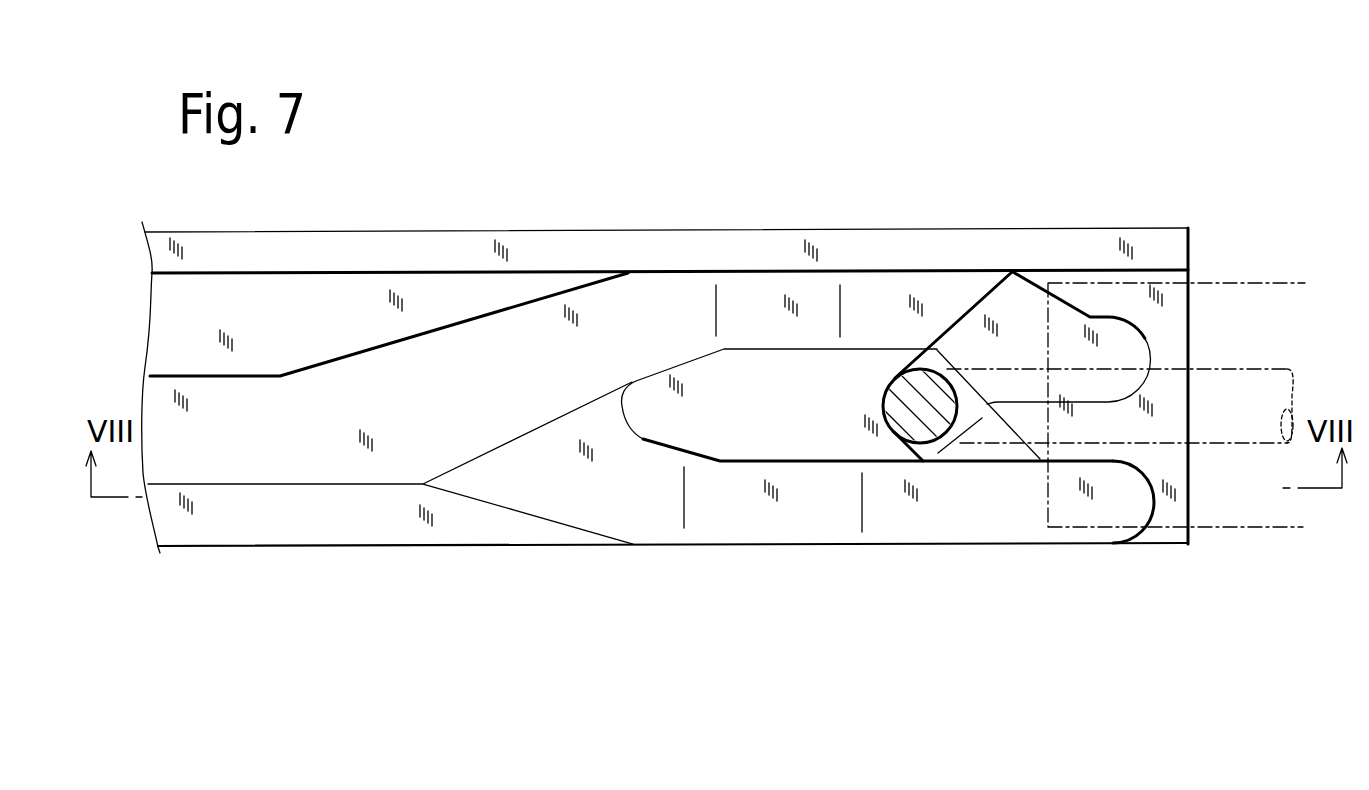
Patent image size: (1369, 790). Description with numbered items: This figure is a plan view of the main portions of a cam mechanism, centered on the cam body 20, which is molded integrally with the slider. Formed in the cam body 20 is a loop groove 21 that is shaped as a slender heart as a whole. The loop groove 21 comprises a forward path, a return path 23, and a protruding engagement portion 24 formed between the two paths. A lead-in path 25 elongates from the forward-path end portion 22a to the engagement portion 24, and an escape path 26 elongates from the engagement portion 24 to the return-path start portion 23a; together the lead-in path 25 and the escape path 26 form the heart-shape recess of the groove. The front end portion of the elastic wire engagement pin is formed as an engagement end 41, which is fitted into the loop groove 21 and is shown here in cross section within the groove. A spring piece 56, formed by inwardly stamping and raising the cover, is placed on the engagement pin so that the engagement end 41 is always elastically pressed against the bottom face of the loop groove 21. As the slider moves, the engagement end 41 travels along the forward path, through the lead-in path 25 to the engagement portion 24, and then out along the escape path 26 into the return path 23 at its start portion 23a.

The cam body 20 is at (372, 547).
The loop groove 21 is at (603, 300).
The forward-path end portion 22a is at (1150, 334).
The return path 23 is at (658, 507).
The return-path start portion 23a is at (1130, 497).
The engagement portion 24 is at (757, 363).
The lead-in path 25 is at (1023, 327).
The escape path 26 is at (963, 420).
The engagement end 41 is at (913, 393).
The spring piece 56 is at (1067, 527).